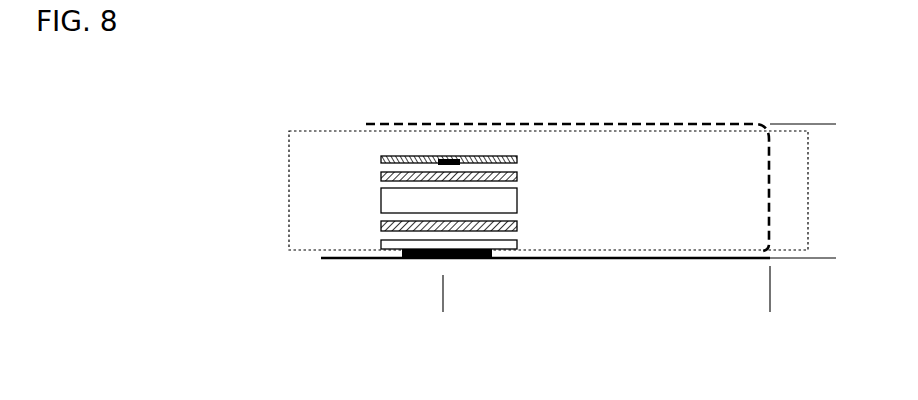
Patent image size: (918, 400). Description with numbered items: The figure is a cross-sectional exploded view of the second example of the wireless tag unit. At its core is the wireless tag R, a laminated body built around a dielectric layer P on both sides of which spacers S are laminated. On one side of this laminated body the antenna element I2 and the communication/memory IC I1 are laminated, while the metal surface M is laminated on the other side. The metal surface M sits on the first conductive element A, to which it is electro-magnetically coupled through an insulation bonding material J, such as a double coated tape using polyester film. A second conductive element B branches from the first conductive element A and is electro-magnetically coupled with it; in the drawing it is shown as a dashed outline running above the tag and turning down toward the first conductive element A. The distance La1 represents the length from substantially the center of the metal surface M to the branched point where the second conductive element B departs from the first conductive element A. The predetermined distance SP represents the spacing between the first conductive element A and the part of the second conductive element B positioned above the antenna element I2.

The predetermined distance SP is at (826, 124).
The second conductive element B is at (630, 124).
The first conductive element A is at (693, 256).
The insulation bonding material J is at (423, 259).
The wireless tag R is at (580, 150).
The antenna element I2 is at (517, 160).
The communication/memory IC I1 is at (437, 164).
The spacer S is at (517, 175).
The dielectric layer P is at (508, 206).
The metal surface M is at (517, 244).
The distance La1 is at (768, 302).